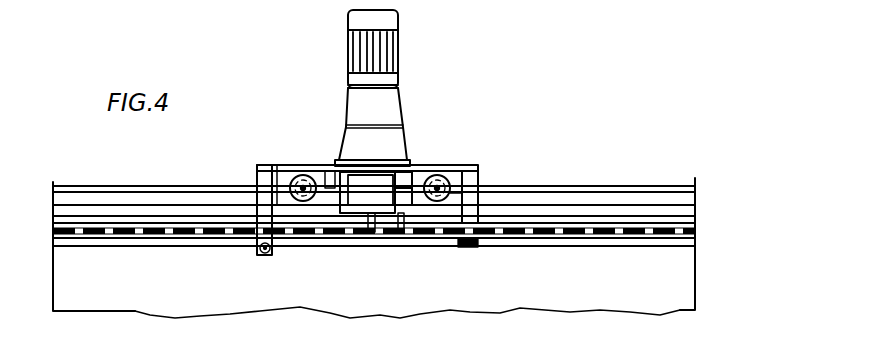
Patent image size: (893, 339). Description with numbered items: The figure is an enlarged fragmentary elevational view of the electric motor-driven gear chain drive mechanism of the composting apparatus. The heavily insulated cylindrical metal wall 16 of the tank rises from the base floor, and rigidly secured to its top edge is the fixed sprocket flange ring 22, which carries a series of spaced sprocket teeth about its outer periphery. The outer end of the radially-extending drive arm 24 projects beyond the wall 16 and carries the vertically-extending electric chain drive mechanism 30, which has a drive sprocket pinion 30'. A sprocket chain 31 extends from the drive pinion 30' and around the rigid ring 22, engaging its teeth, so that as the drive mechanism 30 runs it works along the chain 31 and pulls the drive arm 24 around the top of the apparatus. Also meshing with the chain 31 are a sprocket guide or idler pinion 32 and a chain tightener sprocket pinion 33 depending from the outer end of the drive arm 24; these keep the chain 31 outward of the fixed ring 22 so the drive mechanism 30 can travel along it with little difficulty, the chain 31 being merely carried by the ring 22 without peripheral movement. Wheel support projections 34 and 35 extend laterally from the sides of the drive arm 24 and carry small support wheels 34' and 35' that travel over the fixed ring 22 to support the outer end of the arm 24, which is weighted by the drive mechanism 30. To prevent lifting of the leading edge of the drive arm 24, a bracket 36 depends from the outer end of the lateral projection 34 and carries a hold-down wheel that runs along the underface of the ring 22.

The cylindrical metal wall 16 is at (130, 299).
The sprocket flange ring 22 is at (537, 206).
The drive arm 24 is at (382, 168).
The electric chain drive mechanism 30 is at (409, 88).
The drive sprocket pinion 30' is at (360, 255).
The sprocket chain 31 is at (540, 240).
The sprocket guide or idler pinion 32 is at (404, 240).
The chain tightener sprocket pinion 33 is at (468, 247).
The wheel support projection 34 is at (301, 154).
The support wheel 34' is at (265, 159).
The wheel support projection 35 is at (474, 184).
The support wheel 35' is at (488, 159).
The bracket 36 is at (261, 184).